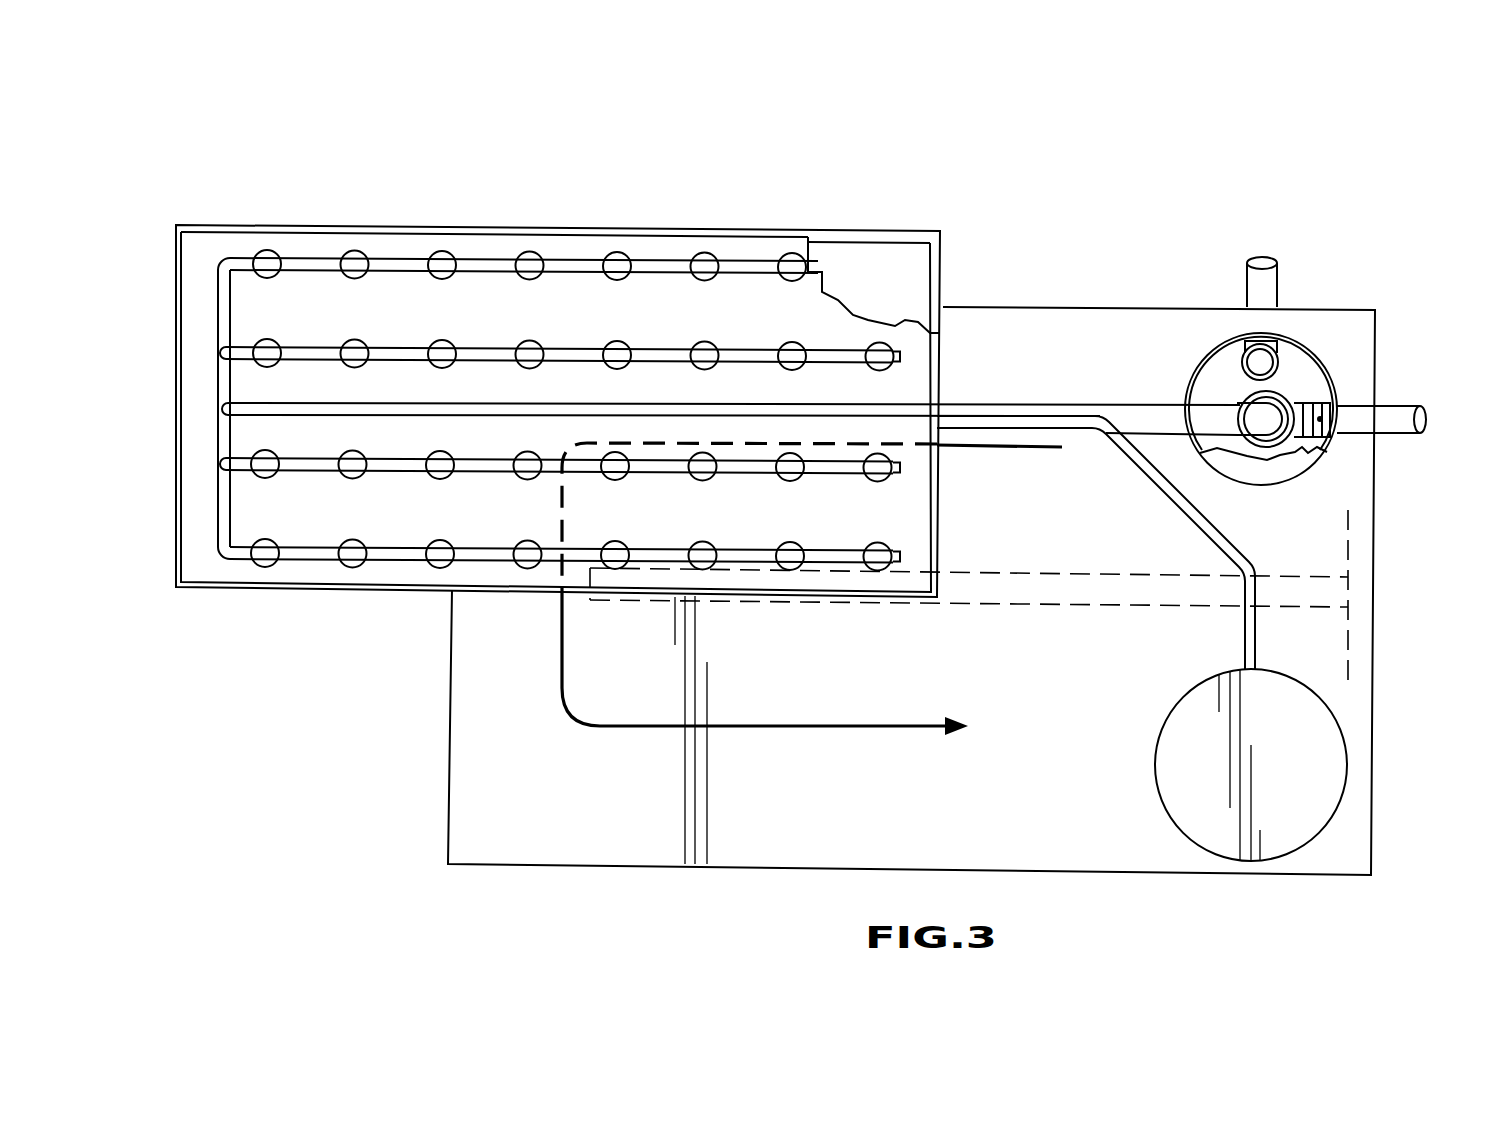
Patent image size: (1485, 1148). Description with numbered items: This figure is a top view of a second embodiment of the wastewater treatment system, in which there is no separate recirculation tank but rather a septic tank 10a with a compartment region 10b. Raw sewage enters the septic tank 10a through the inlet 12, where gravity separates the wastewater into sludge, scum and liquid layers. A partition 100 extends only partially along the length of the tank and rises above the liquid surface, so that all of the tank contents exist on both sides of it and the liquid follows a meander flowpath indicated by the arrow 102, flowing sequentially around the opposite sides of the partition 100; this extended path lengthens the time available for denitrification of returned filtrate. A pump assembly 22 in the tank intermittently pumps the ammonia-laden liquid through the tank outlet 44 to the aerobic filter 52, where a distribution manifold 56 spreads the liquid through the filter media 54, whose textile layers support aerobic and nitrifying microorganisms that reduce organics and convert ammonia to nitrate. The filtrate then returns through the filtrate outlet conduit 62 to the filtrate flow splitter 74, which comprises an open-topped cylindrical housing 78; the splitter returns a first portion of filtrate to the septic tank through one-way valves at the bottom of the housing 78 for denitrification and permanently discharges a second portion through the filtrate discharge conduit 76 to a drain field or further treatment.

The aerobic filter 52 is at (460, 197).
The filter media 54 is at (572, 288).
The distribution manifold 56 is at (748, 259).
The filtrate outlet conduit 62 is at (1117, 403).
The tank outlet 44 is at (1178, 505).
The filtrate flow splitter 74 is at (1230, 383).
The cylindrical housing 78 is at (1297, 387).
The filtrate discharge conduit 76 is at (1404, 404).
The inlet 12 is at (1278, 277).
The pump assembly 22 is at (1345, 860).
The septic tank 10a is at (1030, 381).
The lower compartment 10b is at (1027, 680).
The partition 100 is at (577, 595).
The meander flowpath arrow 102 is at (1008, 453).